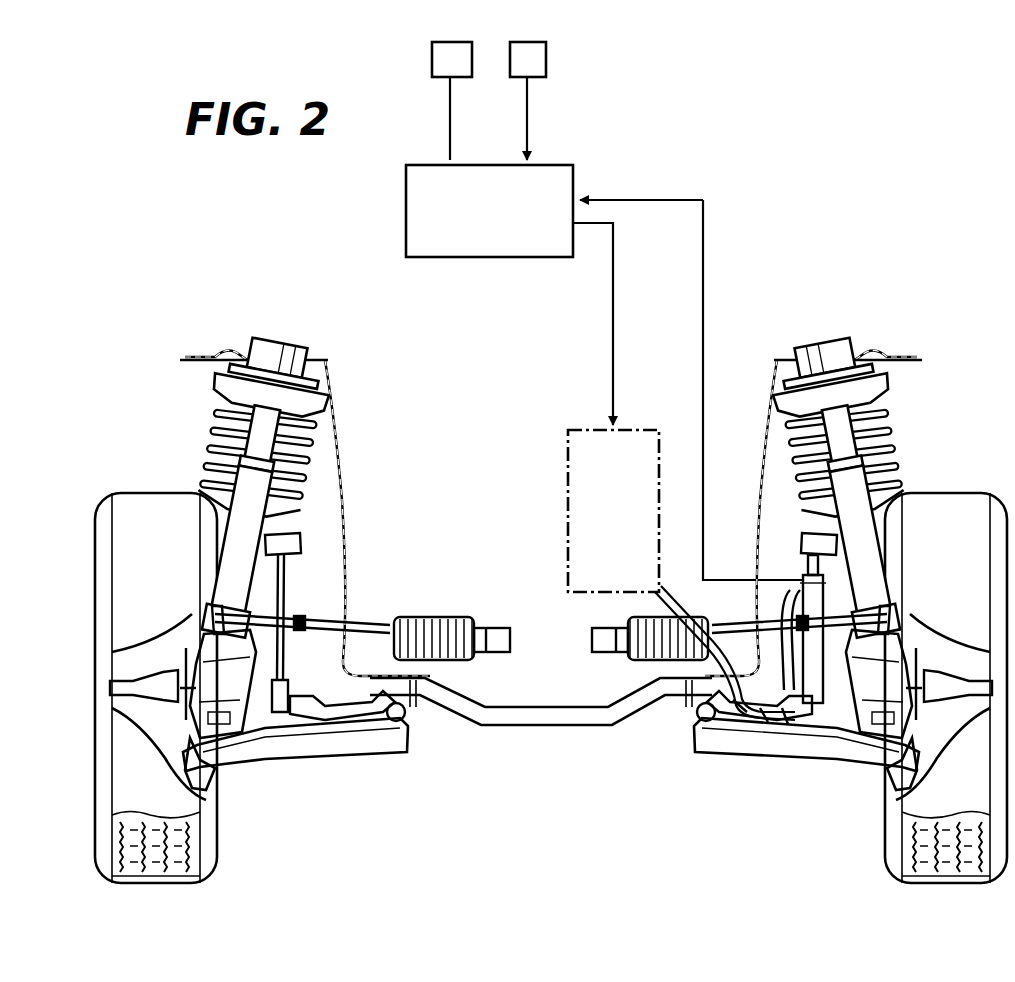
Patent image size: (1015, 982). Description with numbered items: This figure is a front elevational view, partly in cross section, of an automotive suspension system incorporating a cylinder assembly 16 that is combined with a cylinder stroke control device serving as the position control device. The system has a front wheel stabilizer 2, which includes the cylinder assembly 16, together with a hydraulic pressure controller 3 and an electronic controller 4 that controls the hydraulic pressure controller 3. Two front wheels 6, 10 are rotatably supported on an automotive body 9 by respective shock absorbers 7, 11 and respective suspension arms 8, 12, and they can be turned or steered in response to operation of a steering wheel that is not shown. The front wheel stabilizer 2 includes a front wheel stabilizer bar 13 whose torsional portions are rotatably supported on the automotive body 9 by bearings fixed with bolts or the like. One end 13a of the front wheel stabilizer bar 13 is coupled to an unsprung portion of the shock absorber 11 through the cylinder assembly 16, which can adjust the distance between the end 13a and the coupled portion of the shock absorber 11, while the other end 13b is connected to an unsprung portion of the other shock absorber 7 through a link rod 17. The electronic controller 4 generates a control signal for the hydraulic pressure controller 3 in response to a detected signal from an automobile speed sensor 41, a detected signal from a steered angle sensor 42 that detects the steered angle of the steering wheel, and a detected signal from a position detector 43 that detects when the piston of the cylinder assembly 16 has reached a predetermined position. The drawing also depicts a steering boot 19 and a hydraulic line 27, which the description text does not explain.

The front wheel stabilizer 2 is at (446, 465).
The hydraulic pressure controller 3 is at (660, 470).
The electronic controller 4 is at (520, 258).
The front wheel 6 is at (140, 493).
The shock absorber 7 is at (250, 614).
The suspension arm 8 is at (318, 758).
The automotive body 9 is at (343, 600).
The front wheel 10 is at (958, 493).
The shock absorber 11 is at (846, 526).
The suspension arm 12 is at (840, 765).
The front wheel stabilizer bar 13 is at (513, 708).
The end of the front wheel stabilizer bar 13a is at (803, 742).
The other end of the front wheel stabilizer bar 13b is at (322, 694).
The cylinder assembly 16 is at (800, 607).
The link rod 17 is at (310, 594).
The steering tie rod boot 19 is at (428, 618).
The hydraulic pipe 27 is at (797, 555).
The automobile speed sensor 41 is at (432, 58).
The steered angle sensor 42 is at (546, 60).
The position detector 43 is at (806, 584).